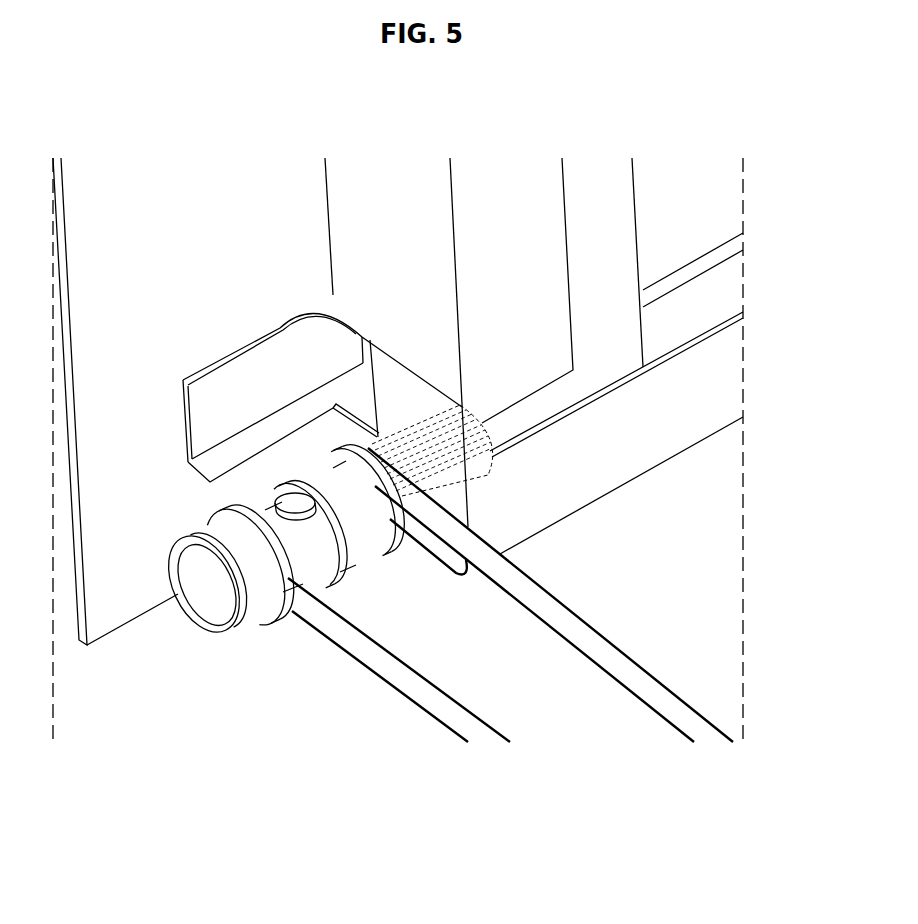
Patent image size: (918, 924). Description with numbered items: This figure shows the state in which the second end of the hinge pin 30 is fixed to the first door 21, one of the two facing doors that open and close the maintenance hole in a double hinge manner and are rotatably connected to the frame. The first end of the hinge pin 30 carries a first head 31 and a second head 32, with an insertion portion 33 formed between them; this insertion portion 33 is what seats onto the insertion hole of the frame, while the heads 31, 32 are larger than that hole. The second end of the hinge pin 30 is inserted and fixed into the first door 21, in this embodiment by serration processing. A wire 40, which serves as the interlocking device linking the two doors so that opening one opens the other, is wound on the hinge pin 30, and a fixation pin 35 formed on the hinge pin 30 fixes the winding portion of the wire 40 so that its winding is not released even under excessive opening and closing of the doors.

The first door 21 is at (693, 303).
The hinge pin 30 is at (262, 473).
The first head 31 is at (212, 612).
The second head 32 is at (287, 592).
The insertion portion 33 is at (248, 577).
The fixation pin 35 is at (294, 507).
The wire 40 is at (600, 653).